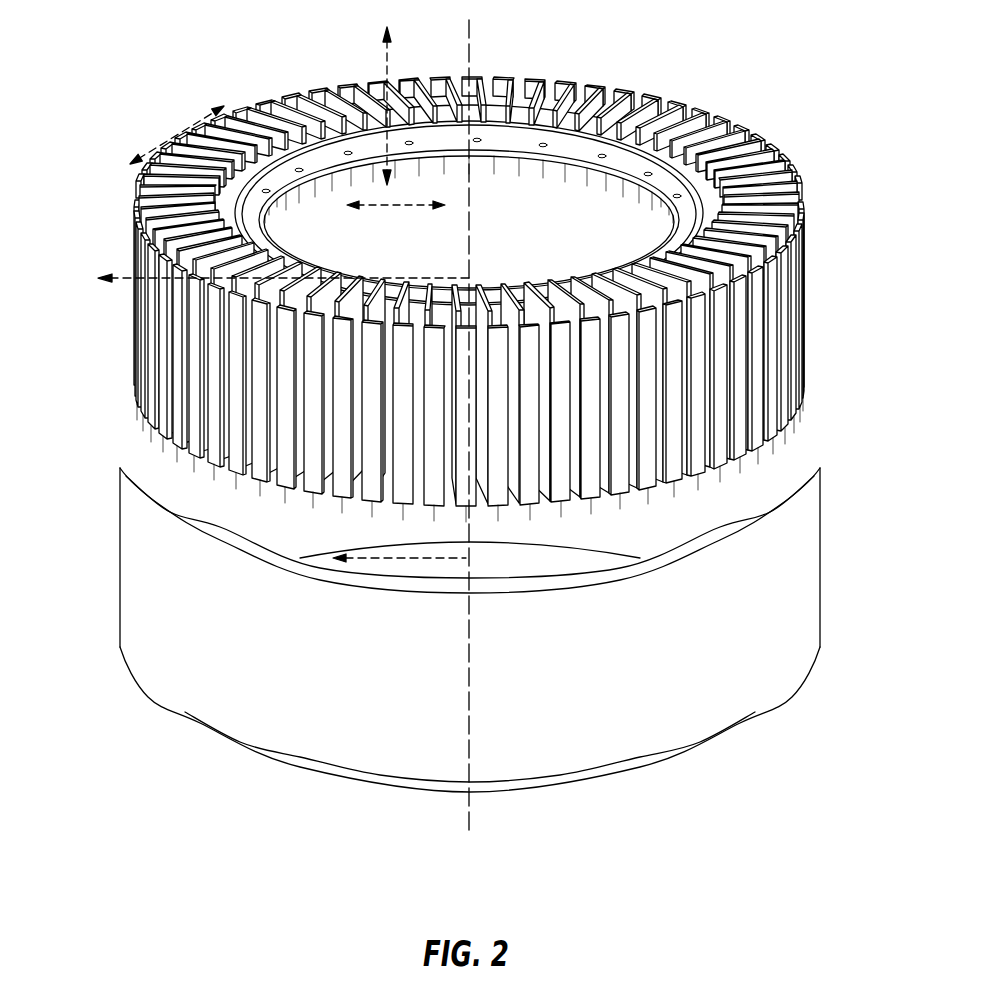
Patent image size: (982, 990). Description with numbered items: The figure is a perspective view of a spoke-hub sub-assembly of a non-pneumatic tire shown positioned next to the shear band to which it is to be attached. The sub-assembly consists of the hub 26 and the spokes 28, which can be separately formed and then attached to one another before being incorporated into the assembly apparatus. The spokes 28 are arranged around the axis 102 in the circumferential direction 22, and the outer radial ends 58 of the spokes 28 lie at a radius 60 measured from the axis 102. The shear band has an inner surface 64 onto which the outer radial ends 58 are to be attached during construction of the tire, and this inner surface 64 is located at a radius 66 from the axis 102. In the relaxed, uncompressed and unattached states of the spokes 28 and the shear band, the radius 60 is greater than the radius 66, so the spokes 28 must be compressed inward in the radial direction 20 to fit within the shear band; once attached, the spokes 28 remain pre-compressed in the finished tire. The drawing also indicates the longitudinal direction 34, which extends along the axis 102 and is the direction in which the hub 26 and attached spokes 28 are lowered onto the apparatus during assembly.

The radial direction 20 is at (392, 207).
The circumferential direction 22 is at (168, 133).
The hub 26 is at (558, 234).
The spokes 28 is at (803, 302).
The longitudinal direction 34 is at (385, 62).
The outer radial ends 58 is at (463, 299).
The radius 60 is at (130, 277).
The inner surface 64 is at (690, 529).
The radius 66 is at (442, 557).
The axis 102 is at (473, 70).